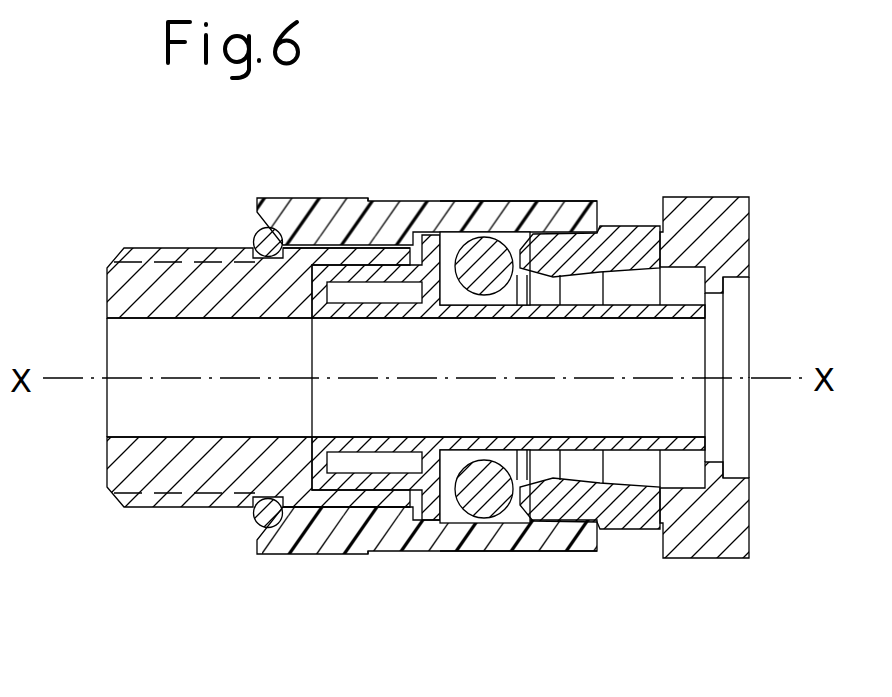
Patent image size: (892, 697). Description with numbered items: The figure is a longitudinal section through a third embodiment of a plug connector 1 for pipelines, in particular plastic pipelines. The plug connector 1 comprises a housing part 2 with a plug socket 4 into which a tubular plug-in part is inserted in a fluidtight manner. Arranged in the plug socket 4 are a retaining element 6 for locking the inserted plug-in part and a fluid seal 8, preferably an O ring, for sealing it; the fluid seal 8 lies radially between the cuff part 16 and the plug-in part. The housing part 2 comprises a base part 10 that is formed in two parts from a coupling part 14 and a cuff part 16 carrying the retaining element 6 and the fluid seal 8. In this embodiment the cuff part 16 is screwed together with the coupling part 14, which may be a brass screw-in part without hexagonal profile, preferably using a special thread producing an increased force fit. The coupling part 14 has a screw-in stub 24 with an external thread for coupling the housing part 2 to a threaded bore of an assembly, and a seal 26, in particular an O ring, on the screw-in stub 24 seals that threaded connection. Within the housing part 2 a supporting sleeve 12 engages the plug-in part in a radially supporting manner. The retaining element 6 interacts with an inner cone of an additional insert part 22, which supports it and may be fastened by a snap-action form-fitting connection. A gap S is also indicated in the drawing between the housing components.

The plug connector 1 is at (428, 378).
The housing part 2 is at (467, 559).
The plug socket 4 is at (627, 293).
The retaining element 6 is at (538, 236).
The fluid seal 8 is at (478, 238).
The base part 10 is at (558, 182).
The supporting sleeve 12 is at (378, 307).
The coupling part 14 is at (241, 281).
The cuff part 16 is at (383, 217).
The insert part 22 is at (630, 225).
The screw-in stub 24 is at (166, 468).
The seal 26 is at (262, 527).
The gap S is at (349, 508).